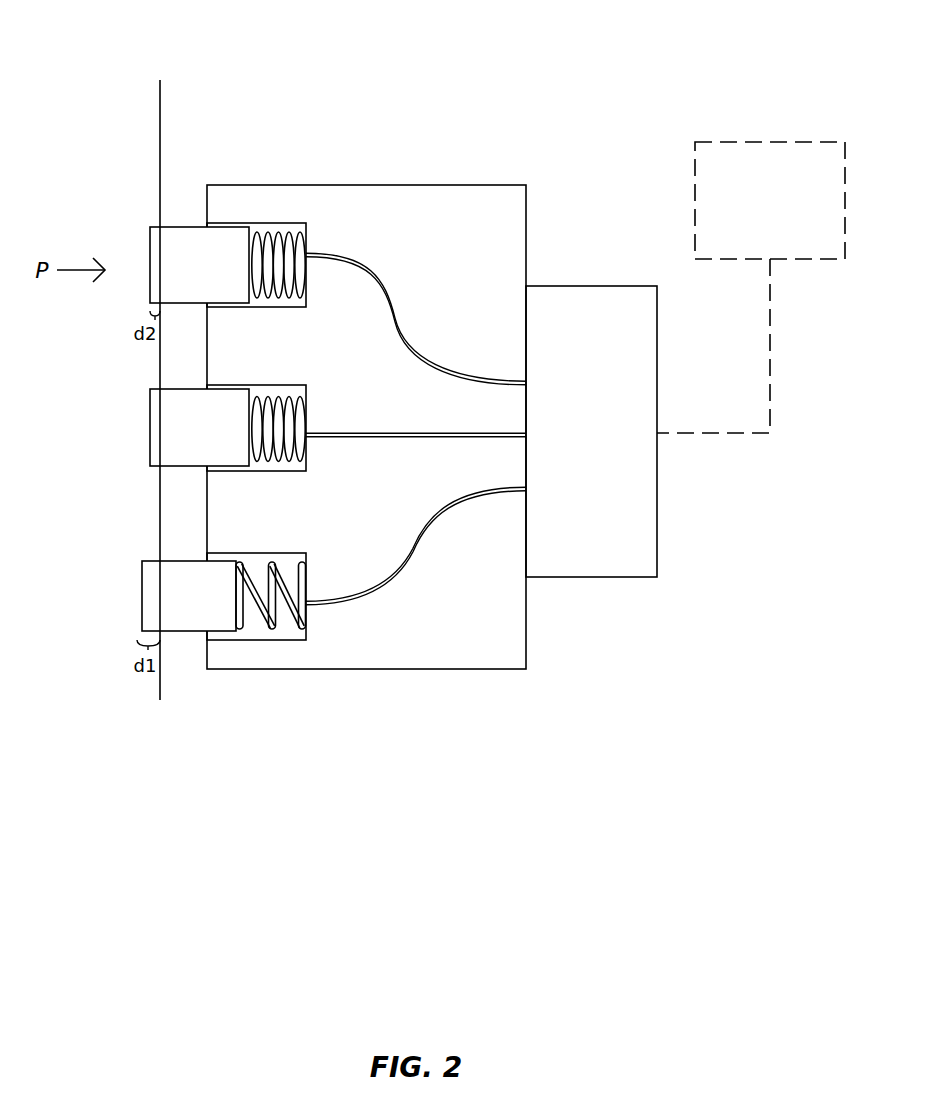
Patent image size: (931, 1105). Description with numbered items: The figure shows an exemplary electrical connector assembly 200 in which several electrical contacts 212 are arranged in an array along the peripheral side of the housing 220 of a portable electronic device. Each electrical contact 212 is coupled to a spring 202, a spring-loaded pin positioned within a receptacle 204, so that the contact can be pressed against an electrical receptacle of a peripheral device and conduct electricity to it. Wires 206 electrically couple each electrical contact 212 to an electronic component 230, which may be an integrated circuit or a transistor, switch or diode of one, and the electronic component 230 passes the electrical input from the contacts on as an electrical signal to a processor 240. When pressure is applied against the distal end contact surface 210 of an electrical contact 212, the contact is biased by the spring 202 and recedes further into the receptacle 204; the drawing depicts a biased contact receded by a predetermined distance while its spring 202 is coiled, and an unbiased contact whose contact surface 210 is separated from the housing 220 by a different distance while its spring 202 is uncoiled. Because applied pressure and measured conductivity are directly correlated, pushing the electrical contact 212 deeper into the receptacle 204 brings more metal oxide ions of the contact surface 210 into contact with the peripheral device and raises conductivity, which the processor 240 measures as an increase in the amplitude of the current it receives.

The electrical connector assembly 200 is at (440, 144).
The spring 202 is at (287, 232).
The receptacle 204 is at (275, 632).
The wires 206 is at (385, 595).
The contact surface 210 is at (143, 598).
The electrical contact 212 is at (148, 455).
The housing 220 is at (162, 202).
The electronic component 230 is at (572, 430).
The processor 240 is at (750, 224).